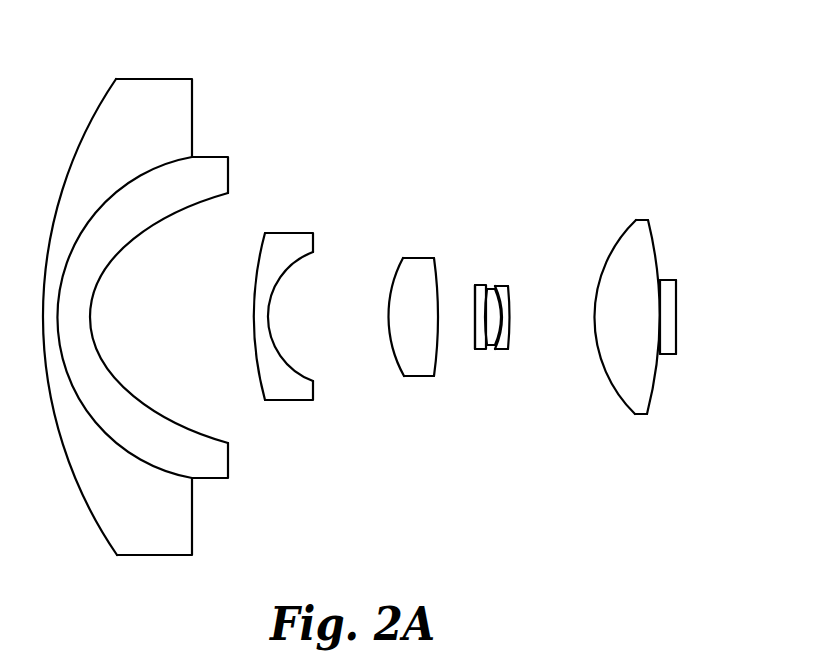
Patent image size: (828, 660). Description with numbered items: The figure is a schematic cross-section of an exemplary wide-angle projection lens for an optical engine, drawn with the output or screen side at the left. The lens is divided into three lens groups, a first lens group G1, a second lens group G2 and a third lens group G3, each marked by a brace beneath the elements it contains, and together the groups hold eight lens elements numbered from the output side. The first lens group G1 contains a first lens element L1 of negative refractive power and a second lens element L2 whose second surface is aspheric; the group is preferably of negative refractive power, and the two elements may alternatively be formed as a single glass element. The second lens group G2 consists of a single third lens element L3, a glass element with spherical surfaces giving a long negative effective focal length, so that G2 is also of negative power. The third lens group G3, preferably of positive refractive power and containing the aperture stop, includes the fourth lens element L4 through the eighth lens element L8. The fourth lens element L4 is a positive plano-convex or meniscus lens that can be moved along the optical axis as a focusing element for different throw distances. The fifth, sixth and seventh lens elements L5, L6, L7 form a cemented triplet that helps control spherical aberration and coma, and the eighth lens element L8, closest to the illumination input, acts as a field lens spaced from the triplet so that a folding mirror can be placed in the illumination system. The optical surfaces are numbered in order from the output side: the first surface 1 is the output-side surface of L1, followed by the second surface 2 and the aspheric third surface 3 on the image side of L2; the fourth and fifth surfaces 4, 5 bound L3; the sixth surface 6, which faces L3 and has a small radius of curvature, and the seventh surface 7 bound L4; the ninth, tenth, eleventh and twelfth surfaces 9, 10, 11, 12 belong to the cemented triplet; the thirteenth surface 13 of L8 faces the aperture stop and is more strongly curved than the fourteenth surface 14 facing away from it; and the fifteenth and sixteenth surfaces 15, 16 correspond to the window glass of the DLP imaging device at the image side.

The first lens group G1 is at (141, 317).
The second lens group G2 is at (284, 330).
The third lens group G3 is at (556, 325).
The first lens element L1 is at (117, 290).
The second lens element L2 is at (164, 291).
The third lens element L3 is at (279, 292).
The fourth lens element L4 is at (407, 315).
The fifth lens element L5 is at (467, 327).
The sixth lens element L6 is at (520, 299).
The seventh lens element L7 is at (530, 289).
The eighth lens element L8 is at (639, 294).
The first surface 1 is at (98, 108).
The second surface 2 is at (138, 177).
The third surface 3 is at (122, 256).
The fourth surface 4 is at (263, 240).
The fifth surface 5 is at (283, 273).
The sixth surface 6 is at (394, 280).
The seventh surface 7 is at (433, 373).
The ninth surface 9 is at (477, 343).
The tenth surface 10 is at (490, 348).
The eleventh surface 11 is at (501, 322).
The twelfth surface 12 is at (510, 297).
The thirteenth surface 13 is at (621, 242).
The fourteenth surface 14 is at (654, 233).
The fifteenth surface 15 is at (657, 329).
The sixteenth surface 16 is at (708, 317).